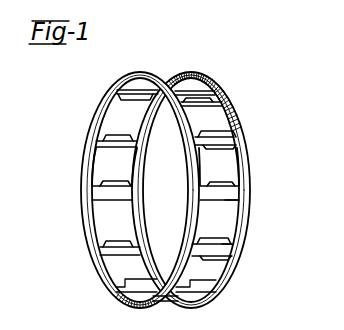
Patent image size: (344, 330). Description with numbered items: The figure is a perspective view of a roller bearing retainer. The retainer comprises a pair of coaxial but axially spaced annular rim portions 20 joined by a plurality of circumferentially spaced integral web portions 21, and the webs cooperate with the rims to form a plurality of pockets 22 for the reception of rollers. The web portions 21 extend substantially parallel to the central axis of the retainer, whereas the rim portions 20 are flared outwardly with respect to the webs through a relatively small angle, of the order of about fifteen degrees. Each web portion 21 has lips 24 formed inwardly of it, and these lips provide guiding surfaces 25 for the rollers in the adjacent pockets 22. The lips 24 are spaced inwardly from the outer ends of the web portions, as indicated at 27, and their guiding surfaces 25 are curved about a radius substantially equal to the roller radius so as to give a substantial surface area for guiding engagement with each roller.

The annular rim portions 20 is at (168, 194).
The web portions 21 is at (100, 128).
The pockets 22 is at (113, 115).
The lips 24 is at (232, 183).
The guiding surfaces 25 is at (112, 98).
The spacing of lips from outer ends of web portions 27 is at (236, 238).